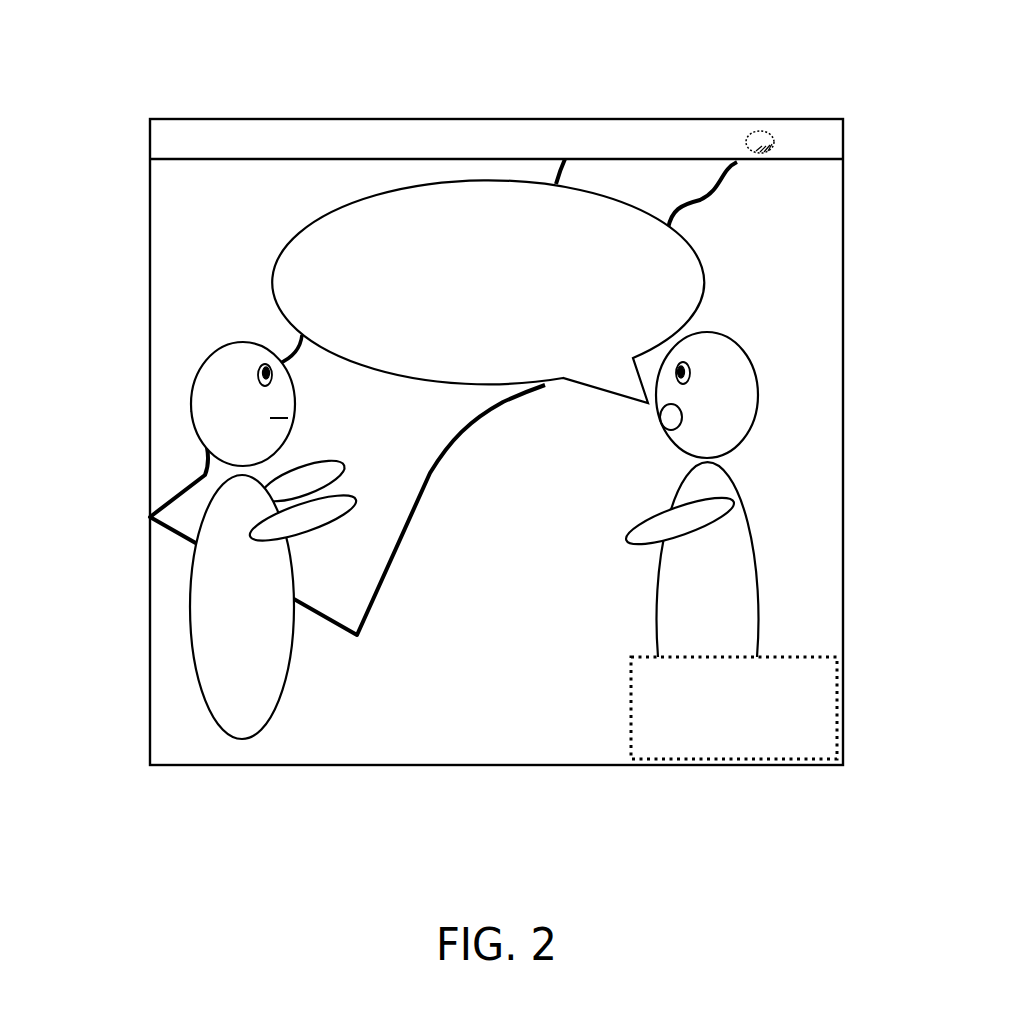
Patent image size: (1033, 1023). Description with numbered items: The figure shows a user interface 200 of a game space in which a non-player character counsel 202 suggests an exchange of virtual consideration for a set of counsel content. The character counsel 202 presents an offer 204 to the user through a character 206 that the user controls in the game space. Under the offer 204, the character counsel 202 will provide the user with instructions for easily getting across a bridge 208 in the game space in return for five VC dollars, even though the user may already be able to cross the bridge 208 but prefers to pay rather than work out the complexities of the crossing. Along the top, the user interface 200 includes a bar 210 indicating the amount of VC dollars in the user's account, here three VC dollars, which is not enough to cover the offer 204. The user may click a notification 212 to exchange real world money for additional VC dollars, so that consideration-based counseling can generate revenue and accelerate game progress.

The user interface 200 is at (565, 78).
The character counsel 202 is at (758, 378).
The offer 204 is at (701, 268).
The character 206 is at (190, 385).
The bridge 208 is at (300, 337).
The bar 210 is at (845, 135).
The notification 212 is at (757, 657).